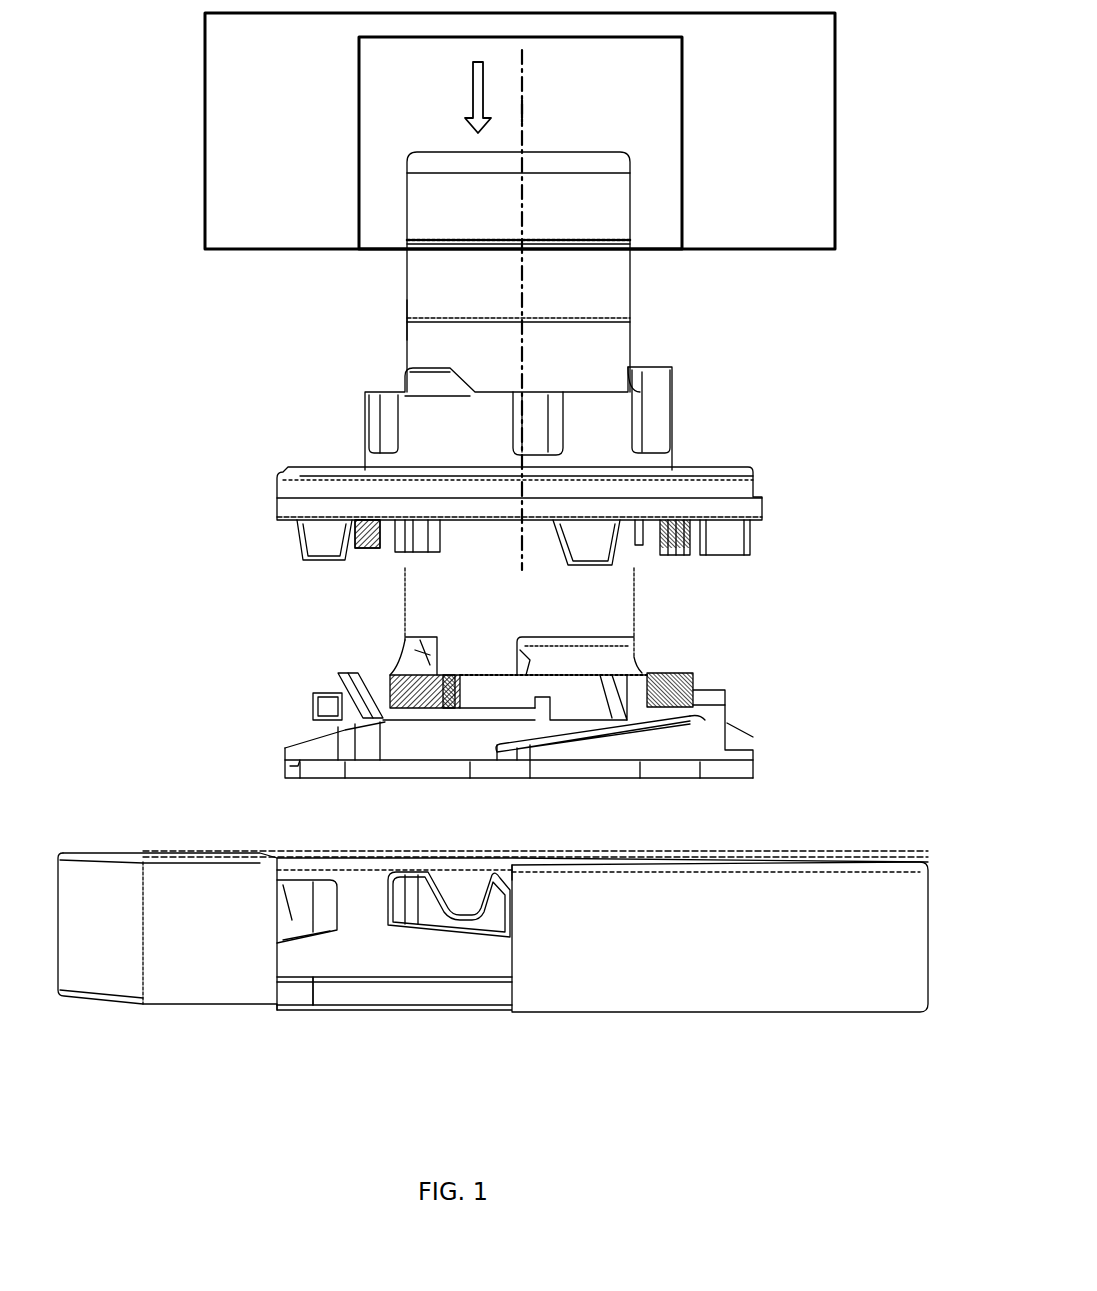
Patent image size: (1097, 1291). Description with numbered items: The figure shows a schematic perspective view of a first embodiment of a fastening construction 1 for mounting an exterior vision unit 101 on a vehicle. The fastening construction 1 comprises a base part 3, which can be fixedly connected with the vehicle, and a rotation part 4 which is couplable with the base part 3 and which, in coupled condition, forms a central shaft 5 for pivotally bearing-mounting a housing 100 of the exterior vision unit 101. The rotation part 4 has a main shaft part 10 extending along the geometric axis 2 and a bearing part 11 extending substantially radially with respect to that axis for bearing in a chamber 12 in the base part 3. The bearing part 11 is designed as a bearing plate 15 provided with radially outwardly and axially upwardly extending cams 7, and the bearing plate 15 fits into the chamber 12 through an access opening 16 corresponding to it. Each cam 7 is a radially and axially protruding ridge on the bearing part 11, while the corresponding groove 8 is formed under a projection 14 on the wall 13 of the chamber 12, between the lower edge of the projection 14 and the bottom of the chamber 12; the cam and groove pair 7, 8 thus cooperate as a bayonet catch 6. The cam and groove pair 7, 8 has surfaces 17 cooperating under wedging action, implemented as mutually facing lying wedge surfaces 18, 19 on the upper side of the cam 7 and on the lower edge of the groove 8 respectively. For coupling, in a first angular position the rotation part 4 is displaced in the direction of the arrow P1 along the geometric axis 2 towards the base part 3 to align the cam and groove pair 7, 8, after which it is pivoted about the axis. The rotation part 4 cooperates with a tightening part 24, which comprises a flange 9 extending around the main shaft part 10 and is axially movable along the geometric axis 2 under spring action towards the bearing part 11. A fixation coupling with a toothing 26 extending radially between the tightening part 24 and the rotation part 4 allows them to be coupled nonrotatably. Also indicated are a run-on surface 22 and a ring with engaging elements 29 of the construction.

The fastening construction 1 is at (903, 690).
The geometric axis 2 is at (524, 72).
The base part 3 is at (493, 945).
The rotation part 4 is at (396, 331).
The central shaft 5 is at (649, 272).
The bayonet catch 6 is at (315, 749).
The cam 7 is at (630, 749).
The groove 8 is at (393, 958).
The flange 9 is at (728, 485).
The main shaft part 10 is at (611, 283).
The bearing part 11 is at (553, 832).
The chamber 12 is at (436, 957).
The wall 13 is at (360, 883).
The projection 14 is at (453, 935).
The bearing plate 15 is at (553, 832).
The access opening 16 is at (552, 860).
The surfaces cooperating under wedging action 17 is at (697, 681).
The wedge surface cam 18 is at (697, 681).
The wedge surface groove 19 is at (457, 984).
The run-on surface 22 is at (374, 695).
The tightening part 24 is at (545, 573).
The toothing 26 is at (530, 614).
The ring with engaging elements 29 is at (370, 411).
The housing 100 is at (359, 147).
The exterior vision unit 101 is at (205, 80).
The arrow P1 is at (473, 88).